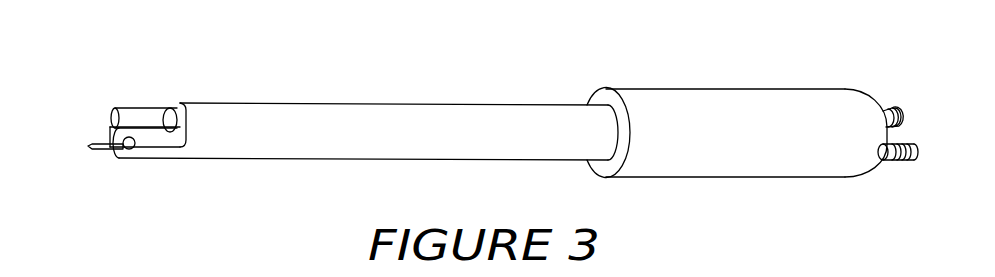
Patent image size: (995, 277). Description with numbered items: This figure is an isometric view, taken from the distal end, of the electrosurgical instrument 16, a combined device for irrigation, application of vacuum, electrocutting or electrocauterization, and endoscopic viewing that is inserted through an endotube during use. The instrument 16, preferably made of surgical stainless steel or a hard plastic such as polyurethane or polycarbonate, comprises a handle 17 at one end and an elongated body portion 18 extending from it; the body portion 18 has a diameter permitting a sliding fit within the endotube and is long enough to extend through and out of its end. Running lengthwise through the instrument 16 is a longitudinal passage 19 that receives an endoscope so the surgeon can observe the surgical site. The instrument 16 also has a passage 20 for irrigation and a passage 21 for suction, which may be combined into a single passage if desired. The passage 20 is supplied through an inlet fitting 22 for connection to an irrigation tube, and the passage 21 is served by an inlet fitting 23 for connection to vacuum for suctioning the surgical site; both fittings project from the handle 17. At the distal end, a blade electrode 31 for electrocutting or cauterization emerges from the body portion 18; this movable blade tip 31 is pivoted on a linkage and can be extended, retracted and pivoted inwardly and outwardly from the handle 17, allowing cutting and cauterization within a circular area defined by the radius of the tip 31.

The electrosurgical instrument 16 is at (478, 102).
The handle 17 is at (738, 110).
The body portion 18 is at (350, 127).
The longitudinal passage 19 is at (167, 113).
The passage 20 is at (128, 150).
The passage 21 is at (112, 118).
The inlet fitting 22 is at (912, 163).
The inlet fitting 23 is at (897, 110).
The blade electrode 31 is at (92, 145).